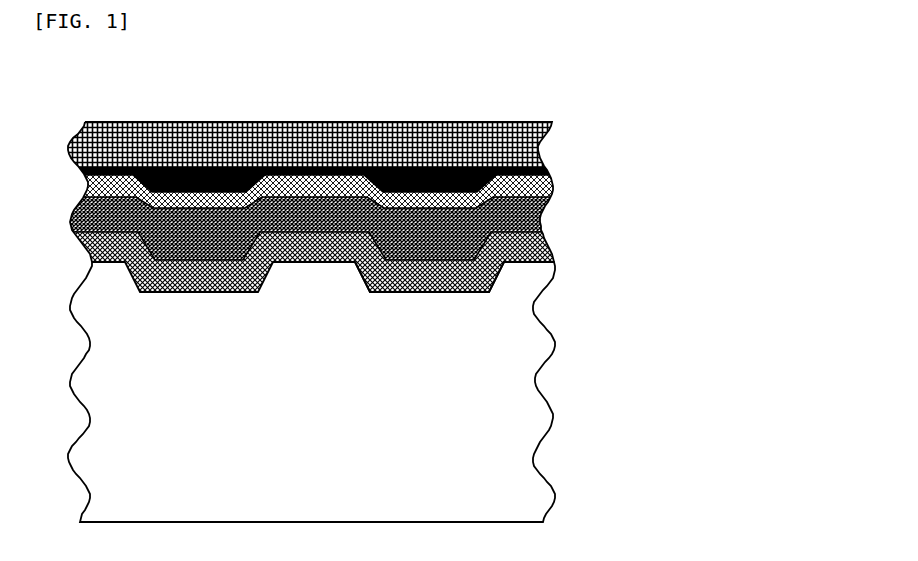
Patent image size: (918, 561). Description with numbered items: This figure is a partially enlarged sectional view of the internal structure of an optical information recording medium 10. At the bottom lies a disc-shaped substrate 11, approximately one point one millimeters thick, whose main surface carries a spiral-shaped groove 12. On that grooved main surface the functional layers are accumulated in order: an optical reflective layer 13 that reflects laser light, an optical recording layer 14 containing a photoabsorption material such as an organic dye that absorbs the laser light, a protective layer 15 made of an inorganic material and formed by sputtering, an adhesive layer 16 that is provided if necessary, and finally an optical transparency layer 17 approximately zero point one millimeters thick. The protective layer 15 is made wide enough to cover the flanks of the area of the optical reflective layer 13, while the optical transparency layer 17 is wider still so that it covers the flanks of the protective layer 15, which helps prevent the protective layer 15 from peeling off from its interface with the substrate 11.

The optical information recording medium 10 is at (378, 98).
The substrate 11 is at (505, 382).
The groove 12 is at (400, 290).
The optical reflective layer 13 is at (542, 237).
The optical recording layer 14 is at (540, 210).
The protective layer 15 is at (550, 180).
The adhesive layer 16 is at (542, 168).
The optical transparency layer 17 is at (538, 148).